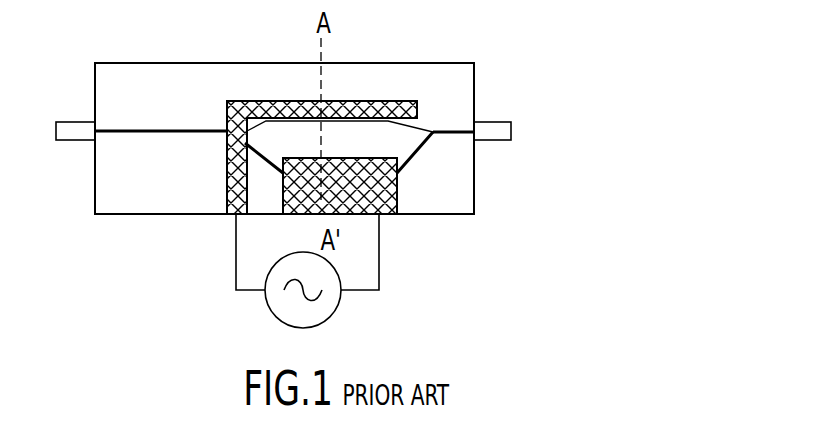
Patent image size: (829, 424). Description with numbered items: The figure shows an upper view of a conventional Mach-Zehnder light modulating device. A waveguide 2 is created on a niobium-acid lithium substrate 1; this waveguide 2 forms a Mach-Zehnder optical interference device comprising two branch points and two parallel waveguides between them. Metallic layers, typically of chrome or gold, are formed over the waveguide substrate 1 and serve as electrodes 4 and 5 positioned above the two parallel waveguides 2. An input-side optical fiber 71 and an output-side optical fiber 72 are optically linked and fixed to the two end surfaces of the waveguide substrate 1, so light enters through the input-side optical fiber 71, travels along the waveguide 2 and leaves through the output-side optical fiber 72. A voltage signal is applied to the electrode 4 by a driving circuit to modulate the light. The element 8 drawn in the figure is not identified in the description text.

The niobium-acid lithium substrate 1 is at (150, 83).
The waveguide 2 is at (160, 132).
The electrode 4 is at (390, 100).
The electrode 5 is at (380, 214).
The AC power source 8 is at (330, 316).
The input-side optical fiber 71 is at (503, 122).
The output-side optical fiber 72 is at (65, 122).